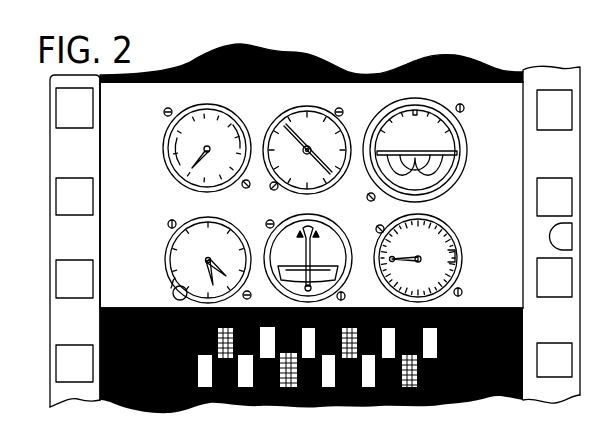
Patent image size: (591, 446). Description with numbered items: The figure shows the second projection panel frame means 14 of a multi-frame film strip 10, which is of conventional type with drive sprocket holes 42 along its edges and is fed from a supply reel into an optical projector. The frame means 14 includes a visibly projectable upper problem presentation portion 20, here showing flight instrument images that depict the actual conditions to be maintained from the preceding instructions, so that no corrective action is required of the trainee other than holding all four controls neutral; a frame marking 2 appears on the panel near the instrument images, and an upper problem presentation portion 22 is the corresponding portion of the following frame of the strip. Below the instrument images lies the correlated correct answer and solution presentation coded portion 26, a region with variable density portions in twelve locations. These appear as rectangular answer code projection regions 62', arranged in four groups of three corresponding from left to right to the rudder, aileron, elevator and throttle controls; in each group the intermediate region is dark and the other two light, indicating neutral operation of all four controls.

The frame number 2 is at (311, 102).
The film strip 10 is at (46, 229).
The projection panel frame means 14 is at (97, 300).
The upper problem presentation portion 20 is at (477, 97).
The upper problem presentation portion 22 is at (301, 377).
The correct answer and solution presentation coded portion 26 is at (190, 416).
The drive sprocket holes 42 is at (62, 103).
The rectangular answer code projection regions 62' is at (317, 377).